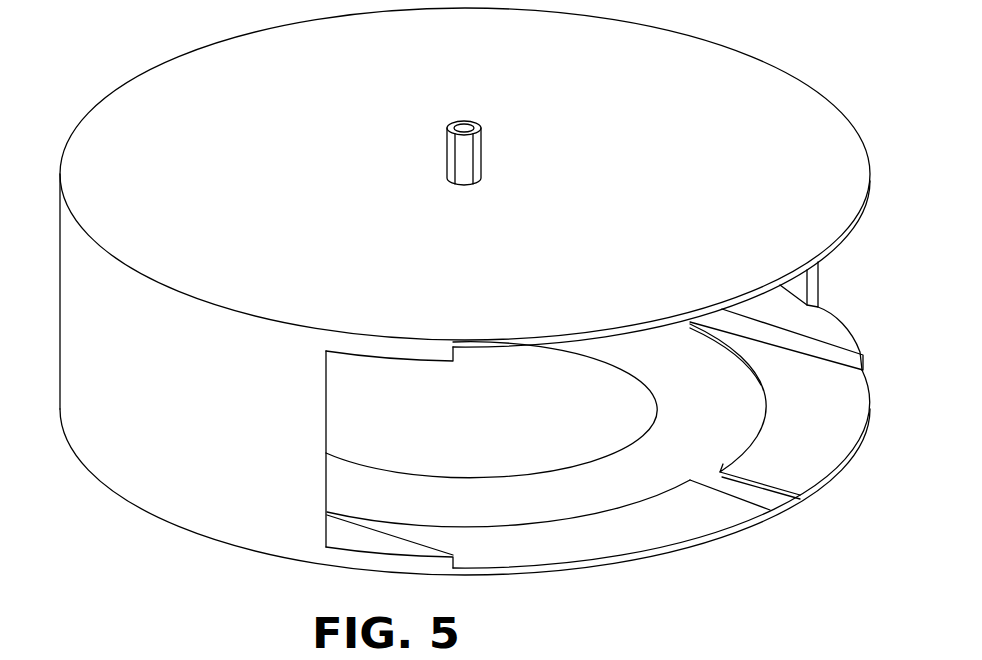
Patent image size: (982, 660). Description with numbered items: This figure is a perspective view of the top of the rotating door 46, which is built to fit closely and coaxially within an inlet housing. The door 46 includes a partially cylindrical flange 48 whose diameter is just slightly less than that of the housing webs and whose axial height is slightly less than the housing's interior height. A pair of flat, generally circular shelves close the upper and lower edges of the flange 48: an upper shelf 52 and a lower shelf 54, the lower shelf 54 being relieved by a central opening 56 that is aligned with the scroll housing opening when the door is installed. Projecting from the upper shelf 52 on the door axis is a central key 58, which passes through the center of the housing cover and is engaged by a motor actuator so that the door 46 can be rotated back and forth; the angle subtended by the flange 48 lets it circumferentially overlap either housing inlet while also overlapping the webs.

The rotating door 46 is at (165, 70).
The partially cylindrical flange 48 is at (178, 498).
The upper shelf 52 is at (776, 97).
The lower shelf 54 is at (690, 533).
The central opening 56 is at (623, 446).
The central key 58 is at (465, 160).